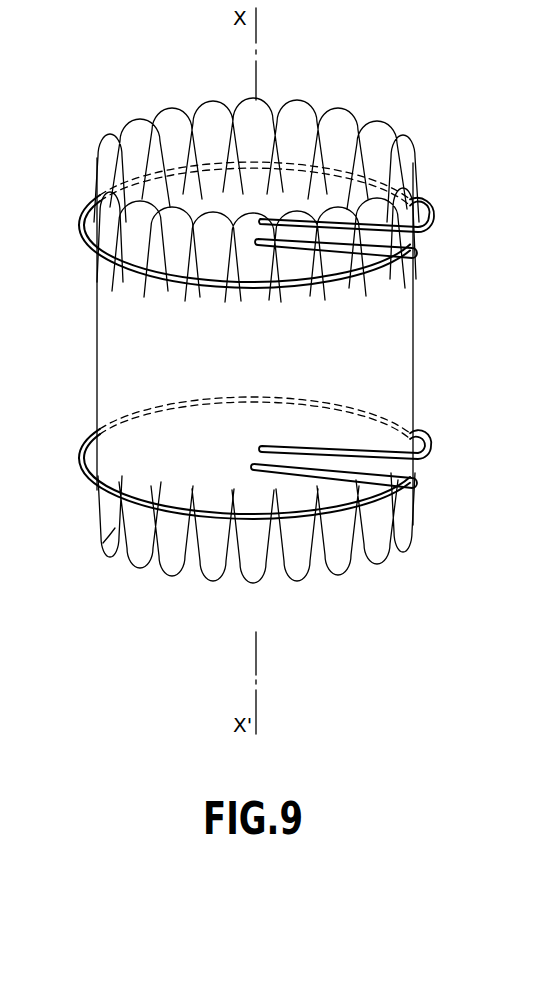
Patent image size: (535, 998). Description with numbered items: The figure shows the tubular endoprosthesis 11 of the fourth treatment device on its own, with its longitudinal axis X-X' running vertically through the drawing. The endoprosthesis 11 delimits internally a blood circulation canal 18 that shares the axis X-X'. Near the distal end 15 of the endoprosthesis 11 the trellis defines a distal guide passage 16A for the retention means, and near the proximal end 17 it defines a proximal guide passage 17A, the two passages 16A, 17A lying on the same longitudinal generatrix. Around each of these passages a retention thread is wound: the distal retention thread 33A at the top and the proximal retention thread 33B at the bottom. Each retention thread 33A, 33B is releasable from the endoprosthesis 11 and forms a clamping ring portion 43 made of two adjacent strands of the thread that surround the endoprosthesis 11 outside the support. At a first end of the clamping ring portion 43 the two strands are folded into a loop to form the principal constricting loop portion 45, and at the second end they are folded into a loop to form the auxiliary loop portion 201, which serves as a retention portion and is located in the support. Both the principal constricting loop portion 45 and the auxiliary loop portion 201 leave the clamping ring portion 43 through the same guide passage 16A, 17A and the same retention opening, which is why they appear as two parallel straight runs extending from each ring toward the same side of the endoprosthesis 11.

The tubular endoprosthesis 11 is at (84, 322).
The distal end 15 is at (103, 185).
The proximal end 17 is at (110, 536).
The blood circulation canal 18 is at (263, 408).
The distal guide passage 16A is at (417, 244).
The proximal guide passage 17A is at (416, 470).
The distal retention thread 33A is at (280, 309).
The proximal retention thread 33B is at (306, 530).
The clamping ring portion 43 is at (152, 284).
The principal constricting loop portion 45 is at (243, 249).
The auxiliary loop portion 201 is at (257, 214).